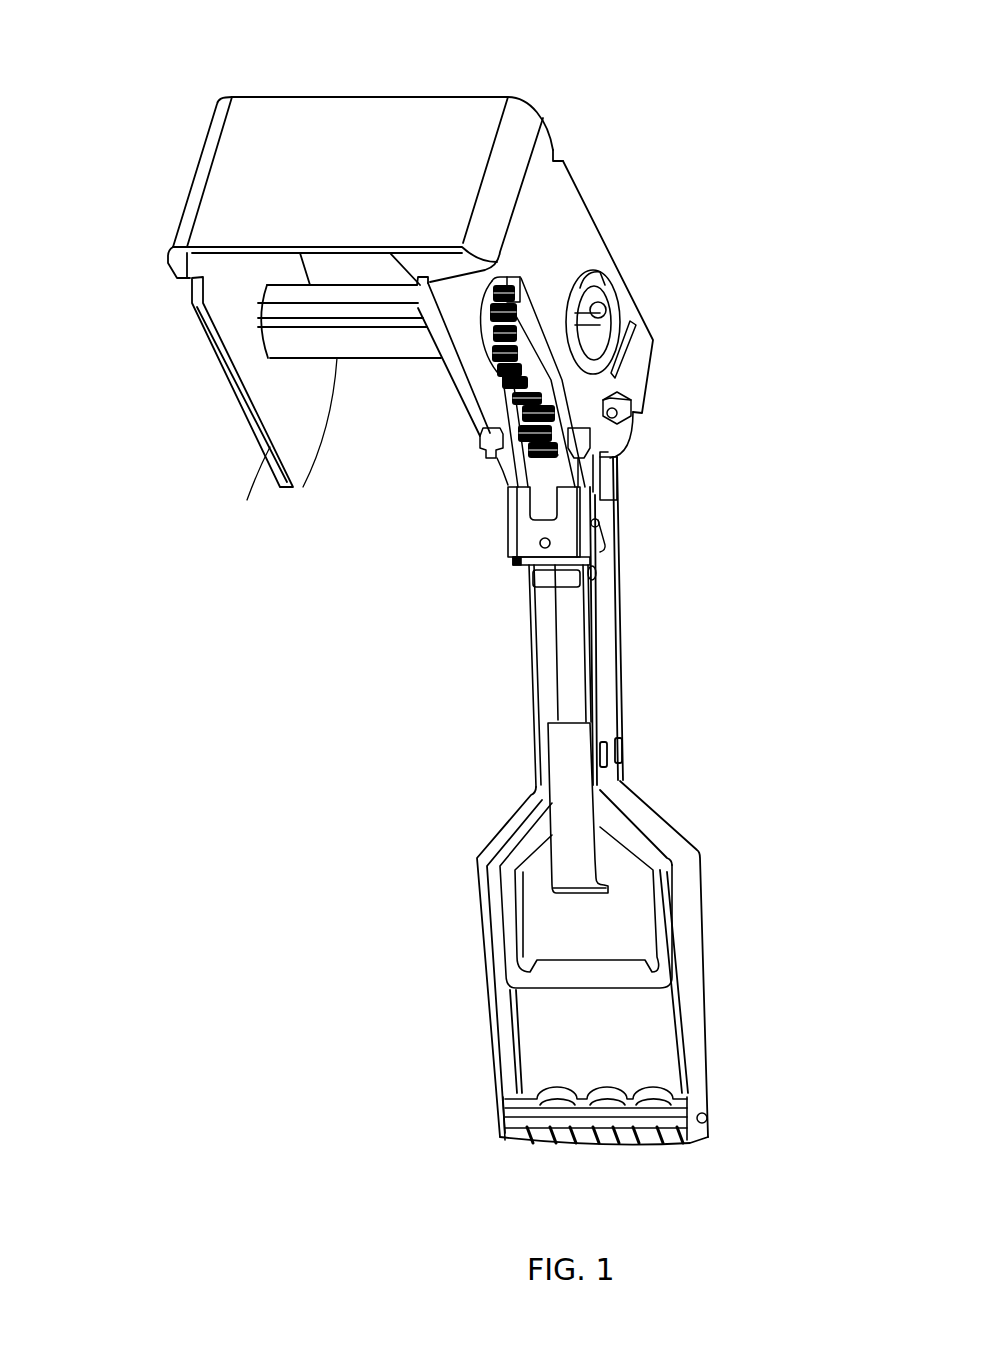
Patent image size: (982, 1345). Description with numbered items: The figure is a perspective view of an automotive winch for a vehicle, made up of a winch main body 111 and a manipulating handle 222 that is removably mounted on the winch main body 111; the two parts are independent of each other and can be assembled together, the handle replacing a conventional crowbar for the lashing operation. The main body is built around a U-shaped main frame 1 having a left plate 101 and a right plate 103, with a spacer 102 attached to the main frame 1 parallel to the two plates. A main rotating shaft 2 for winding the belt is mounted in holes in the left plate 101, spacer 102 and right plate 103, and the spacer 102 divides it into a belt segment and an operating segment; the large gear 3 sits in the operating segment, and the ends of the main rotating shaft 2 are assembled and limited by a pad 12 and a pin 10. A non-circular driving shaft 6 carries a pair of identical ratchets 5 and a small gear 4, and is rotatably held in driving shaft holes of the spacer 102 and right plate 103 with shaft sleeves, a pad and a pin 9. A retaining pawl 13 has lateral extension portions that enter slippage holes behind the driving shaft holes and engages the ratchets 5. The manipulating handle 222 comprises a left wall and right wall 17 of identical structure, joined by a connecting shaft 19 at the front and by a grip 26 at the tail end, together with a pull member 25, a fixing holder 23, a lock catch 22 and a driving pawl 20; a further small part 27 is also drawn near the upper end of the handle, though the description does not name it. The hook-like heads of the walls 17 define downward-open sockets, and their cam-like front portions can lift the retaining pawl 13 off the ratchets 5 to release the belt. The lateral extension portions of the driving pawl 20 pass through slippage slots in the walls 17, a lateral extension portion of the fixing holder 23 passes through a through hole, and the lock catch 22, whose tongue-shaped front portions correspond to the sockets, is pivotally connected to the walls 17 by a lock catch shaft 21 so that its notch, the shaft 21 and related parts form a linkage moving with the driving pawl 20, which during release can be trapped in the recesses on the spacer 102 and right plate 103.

The main frame 1 is at (432, 125).
The right plate 103 is at (546, 167).
The winch main body 111 is at (213, 423).
The left plate 101 is at (270, 447).
The spacer 102 is at (447, 363).
The main rotating shaft 2 is at (365, 347).
The large gear 3 is at (497, 368).
The small gear 4 is at (493, 453).
The ratchets 5 is at (505, 483).
The pin 10 is at (613, 280).
The pad 12 is at (587, 270).
The retaining pawl 13 is at (657, 362).
The driving shaft 6 is at (630, 420).
The pin 9 is at (625, 448).
The driving pawl 20 is at (610, 488).
The pin 27 is at (613, 548).
The lock catch shaft 21 is at (600, 593).
The left wall and right wall 17 is at (613, 688).
The lock catch 22 is at (515, 533).
The connecting shaft 19 is at (537, 598).
The fixing holder 23 is at (543, 712).
The manipulating handle 222 is at (380, 931).
The pull member 25 is at (643, 982).
The grip 26 is at (582, 1123).